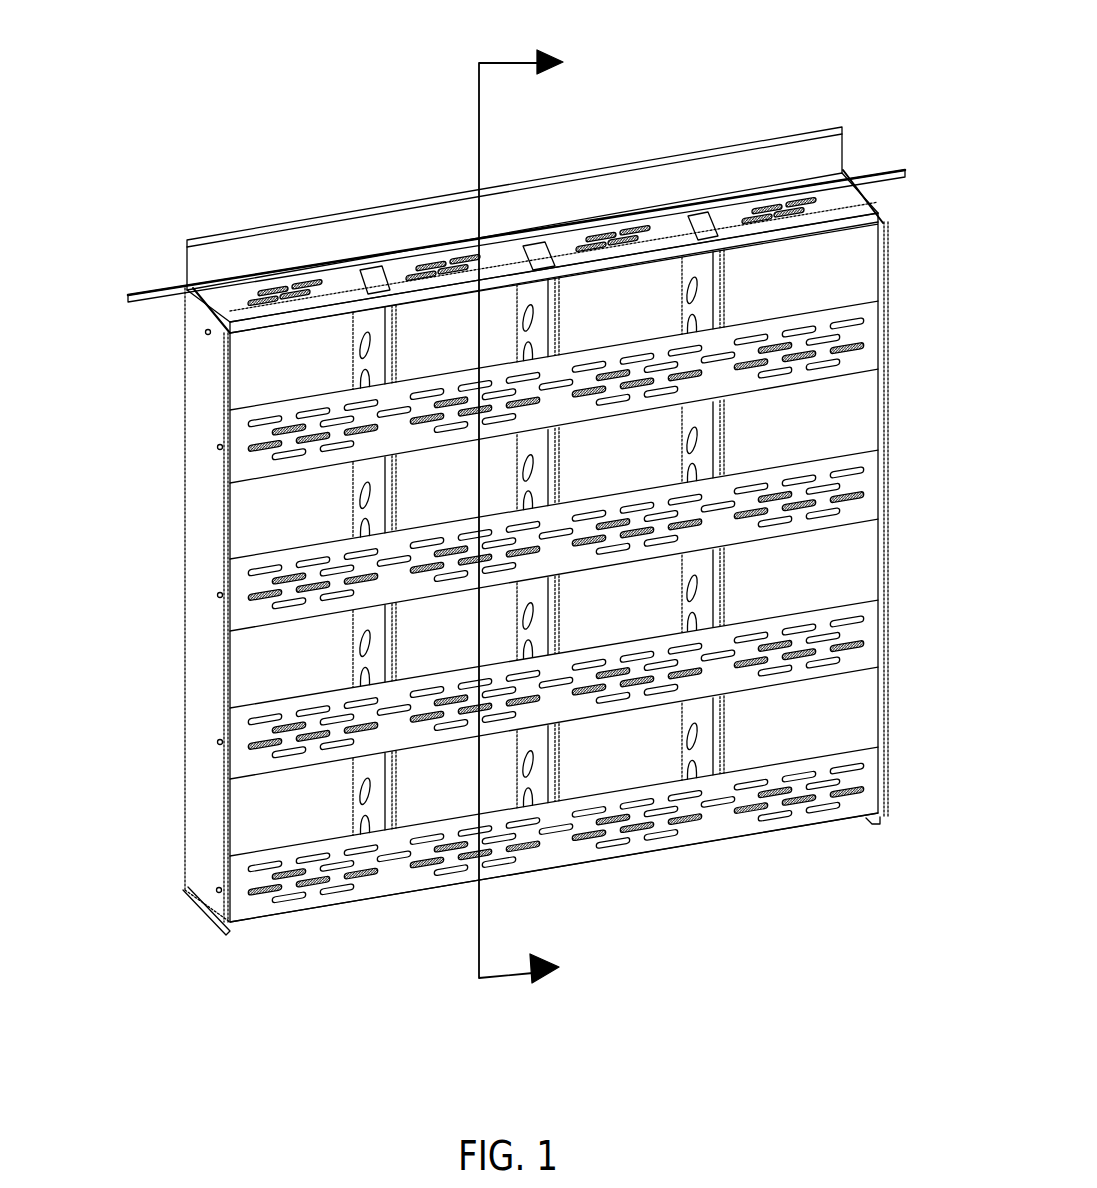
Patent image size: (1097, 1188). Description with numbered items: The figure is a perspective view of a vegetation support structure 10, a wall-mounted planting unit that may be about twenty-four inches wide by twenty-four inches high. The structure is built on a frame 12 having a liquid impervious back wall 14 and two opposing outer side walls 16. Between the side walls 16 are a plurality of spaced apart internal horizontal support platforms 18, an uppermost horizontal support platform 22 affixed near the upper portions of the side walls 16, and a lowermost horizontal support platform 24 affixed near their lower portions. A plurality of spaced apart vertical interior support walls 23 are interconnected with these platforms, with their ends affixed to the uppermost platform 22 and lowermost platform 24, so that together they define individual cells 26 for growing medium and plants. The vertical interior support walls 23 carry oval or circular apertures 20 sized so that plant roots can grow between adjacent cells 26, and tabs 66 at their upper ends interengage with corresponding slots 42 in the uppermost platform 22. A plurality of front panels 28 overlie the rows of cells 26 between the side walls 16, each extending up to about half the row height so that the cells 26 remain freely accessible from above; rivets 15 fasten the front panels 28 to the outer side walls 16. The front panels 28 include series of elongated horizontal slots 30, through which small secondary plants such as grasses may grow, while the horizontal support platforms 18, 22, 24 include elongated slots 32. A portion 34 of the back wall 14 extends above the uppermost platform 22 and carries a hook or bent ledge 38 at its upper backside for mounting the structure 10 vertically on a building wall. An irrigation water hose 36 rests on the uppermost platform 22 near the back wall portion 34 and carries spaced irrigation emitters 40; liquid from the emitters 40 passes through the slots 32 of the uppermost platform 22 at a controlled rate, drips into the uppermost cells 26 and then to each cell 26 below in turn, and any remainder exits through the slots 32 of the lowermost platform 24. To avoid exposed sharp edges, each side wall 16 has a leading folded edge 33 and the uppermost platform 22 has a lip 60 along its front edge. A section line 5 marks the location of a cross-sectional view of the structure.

The section line 5- 5 is at (534, 512).
The vegetation support structure 10 is at (857, 153).
The frame 12 is at (863, 268).
The liquid impervious back wall 14 is at (270, 360).
The rivets 15 is at (217, 447).
The opposing outer side walls 16 is at (860, 540).
The internal horizontal support platforms 18 is at (813, 677).
The oval or circular apertures 20 is at (688, 593).
The uppermost horizontal support platform 22 is at (842, 212).
The vertical interior support walls 23 is at (688, 452).
The lowermost horizontal support platform 24 is at (822, 823).
The cells 26 is at (275, 668).
The front panels 28 is at (857, 450).
The elongated horizontal slots 30 is at (755, 812).
The elongated slots 32 is at (424, 272).
The leading/front folded edge 33 is at (223, 907).
The back wall portion 34 is at (752, 174).
The irrigation water hose 36 is at (128, 297).
The hook/bent ledge 38 is at (217, 230).
The irrigation emitters 40 is at (446, 252).
The slots 42 is at (537, 242).
The lip 60 is at (210, 317).
The tabs 66 is at (572, 242).